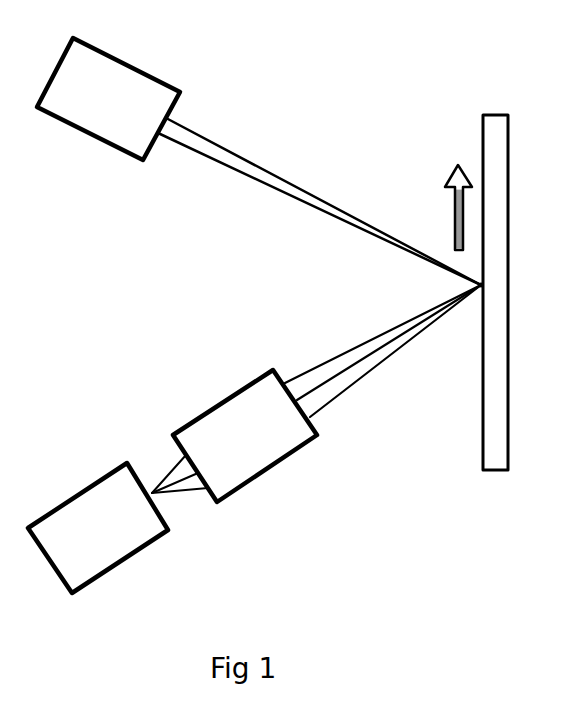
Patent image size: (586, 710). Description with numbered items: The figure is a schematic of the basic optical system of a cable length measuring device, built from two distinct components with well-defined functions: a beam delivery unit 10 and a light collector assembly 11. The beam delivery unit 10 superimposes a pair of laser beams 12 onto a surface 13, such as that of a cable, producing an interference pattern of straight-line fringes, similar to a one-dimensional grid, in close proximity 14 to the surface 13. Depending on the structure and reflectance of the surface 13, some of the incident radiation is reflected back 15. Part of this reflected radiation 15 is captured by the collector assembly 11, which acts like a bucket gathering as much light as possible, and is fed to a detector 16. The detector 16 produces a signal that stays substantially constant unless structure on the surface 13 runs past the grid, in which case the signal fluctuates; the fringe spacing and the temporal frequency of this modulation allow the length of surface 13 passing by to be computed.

The beam delivery unit 10 is at (130, 50).
The light collector assembly 11 is at (270, 480).
The pair of laser beams 12 is at (302, 183).
The surface 13 is at (515, 248).
The close proximity 14 is at (466, 281).
The reflected radiation 15 is at (355, 377).
The detector 16 is at (133, 563).